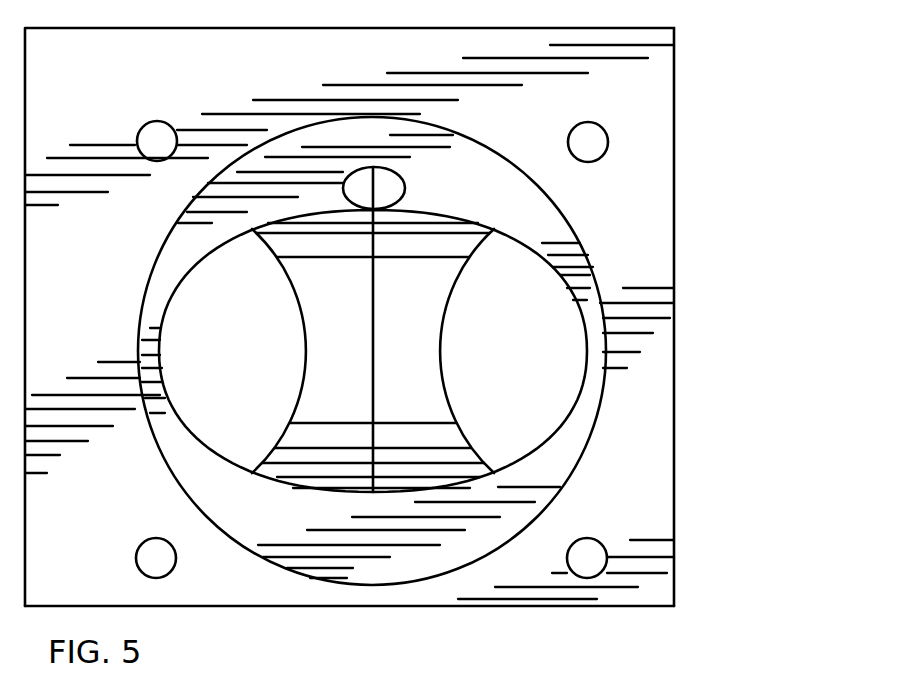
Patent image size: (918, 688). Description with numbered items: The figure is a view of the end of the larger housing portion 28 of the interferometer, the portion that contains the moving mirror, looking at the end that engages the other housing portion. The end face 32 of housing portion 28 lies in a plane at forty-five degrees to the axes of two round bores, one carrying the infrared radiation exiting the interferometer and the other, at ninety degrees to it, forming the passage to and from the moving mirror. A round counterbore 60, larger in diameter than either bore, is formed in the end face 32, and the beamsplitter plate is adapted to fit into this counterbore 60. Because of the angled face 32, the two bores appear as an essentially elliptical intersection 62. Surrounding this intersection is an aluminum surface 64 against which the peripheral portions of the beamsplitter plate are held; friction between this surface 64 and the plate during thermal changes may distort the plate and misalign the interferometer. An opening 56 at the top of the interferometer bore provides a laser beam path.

The larger housing portion 28 is at (683, 150).
The end face 32 is at (180, 587).
The opening 56 is at (383, 183).
The round counterbore 60 is at (575, 468).
The elliptical intersection 62 is at (435, 212).
The aluminum surface 64 is at (353, 133).